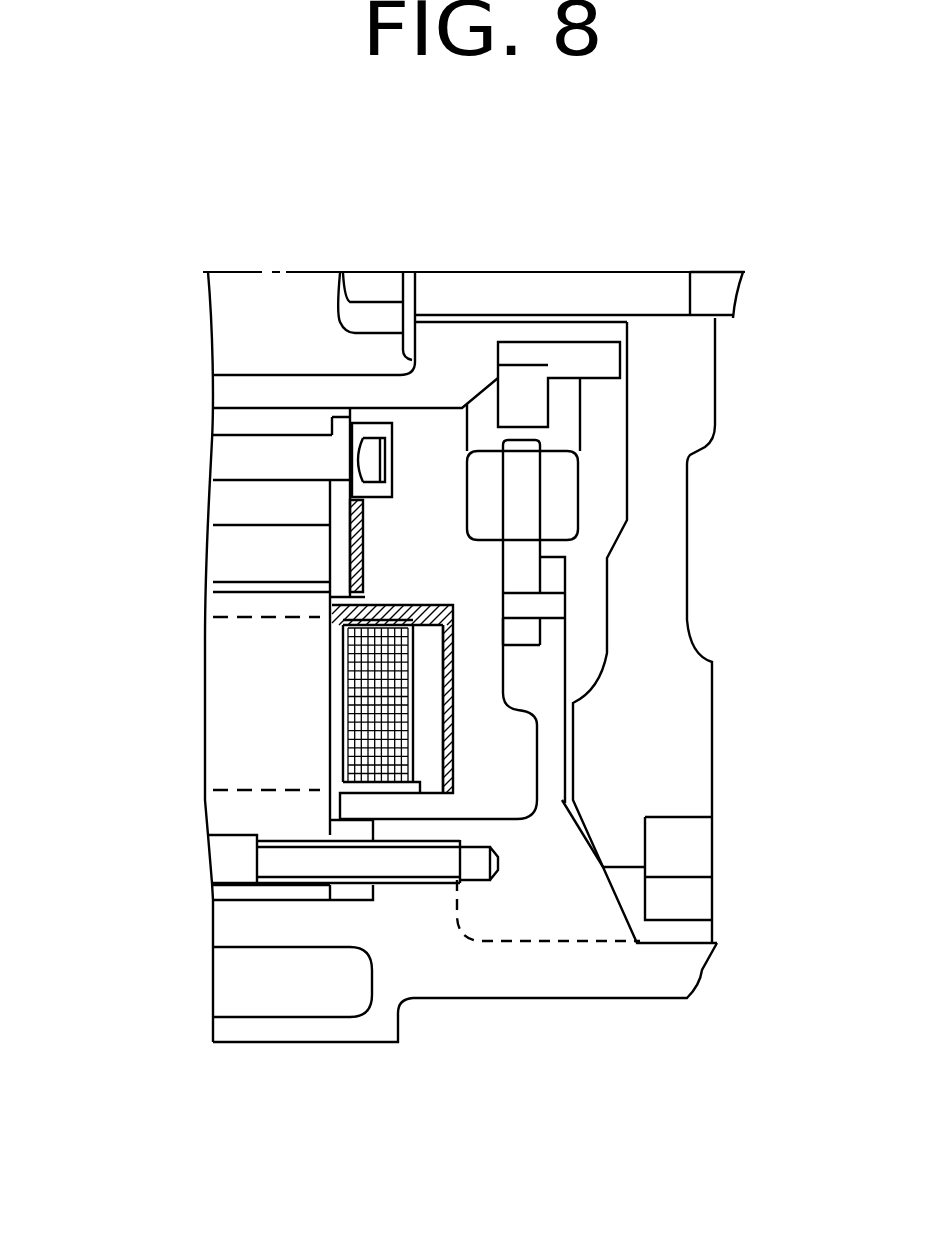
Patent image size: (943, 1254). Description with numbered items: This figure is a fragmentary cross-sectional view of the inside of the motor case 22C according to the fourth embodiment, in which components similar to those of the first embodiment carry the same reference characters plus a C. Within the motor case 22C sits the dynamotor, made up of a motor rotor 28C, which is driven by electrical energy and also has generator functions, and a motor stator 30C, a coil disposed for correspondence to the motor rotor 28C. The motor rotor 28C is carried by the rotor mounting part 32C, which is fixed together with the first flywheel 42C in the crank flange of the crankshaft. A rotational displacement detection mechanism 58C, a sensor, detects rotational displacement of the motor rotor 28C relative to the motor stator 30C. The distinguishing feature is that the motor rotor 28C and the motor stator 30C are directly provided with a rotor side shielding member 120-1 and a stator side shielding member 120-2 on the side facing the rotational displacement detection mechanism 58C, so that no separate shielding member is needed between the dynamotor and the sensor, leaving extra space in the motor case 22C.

The rotor mounting part 32C is at (208, 389).
The motor rotor 28C is at (232, 553).
The motor stator 30C is at (328, 716).
The rotor side shielding member 120-1 is at (372, 548).
The stator side shielding member 120-2 is at (453, 753).
The rotational displacement detection mechanism 58C is at (599, 455).
The first flywheel 42C is at (673, 566).
The motor case 22C is at (549, 744).